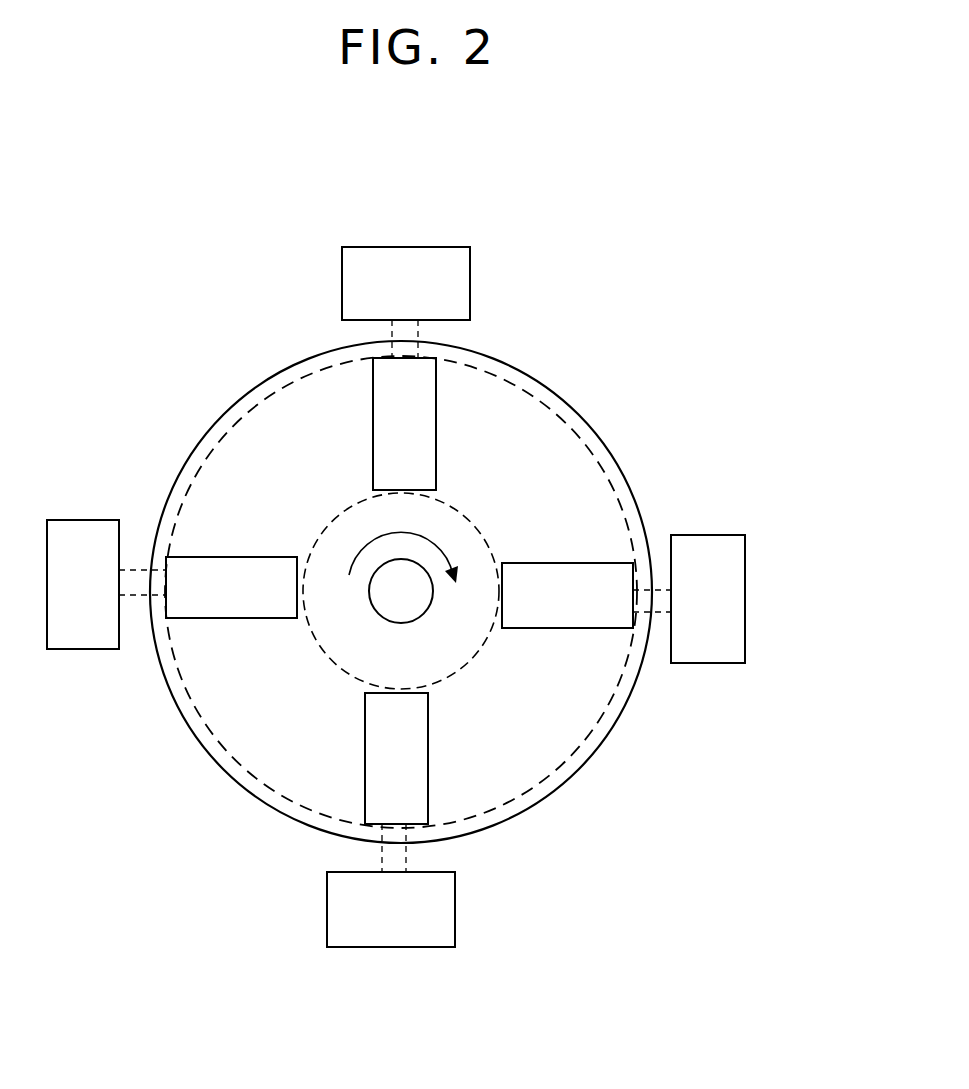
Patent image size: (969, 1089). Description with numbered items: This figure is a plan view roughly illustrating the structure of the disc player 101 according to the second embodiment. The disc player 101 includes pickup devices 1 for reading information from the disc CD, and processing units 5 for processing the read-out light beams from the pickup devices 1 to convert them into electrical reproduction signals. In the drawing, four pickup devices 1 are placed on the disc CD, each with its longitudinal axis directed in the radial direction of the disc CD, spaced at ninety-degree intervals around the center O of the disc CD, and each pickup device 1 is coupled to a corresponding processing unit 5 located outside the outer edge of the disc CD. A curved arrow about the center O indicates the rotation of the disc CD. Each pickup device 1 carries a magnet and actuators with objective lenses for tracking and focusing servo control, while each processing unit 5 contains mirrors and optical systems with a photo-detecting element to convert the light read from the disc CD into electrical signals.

The disc player 101 is at (583, 292).
The disc CD is at (563, 431).
The rotation center O is at (422, 614).
The pickup device 1 is at (436, 428).
The processing unit 5 is at (470, 292).